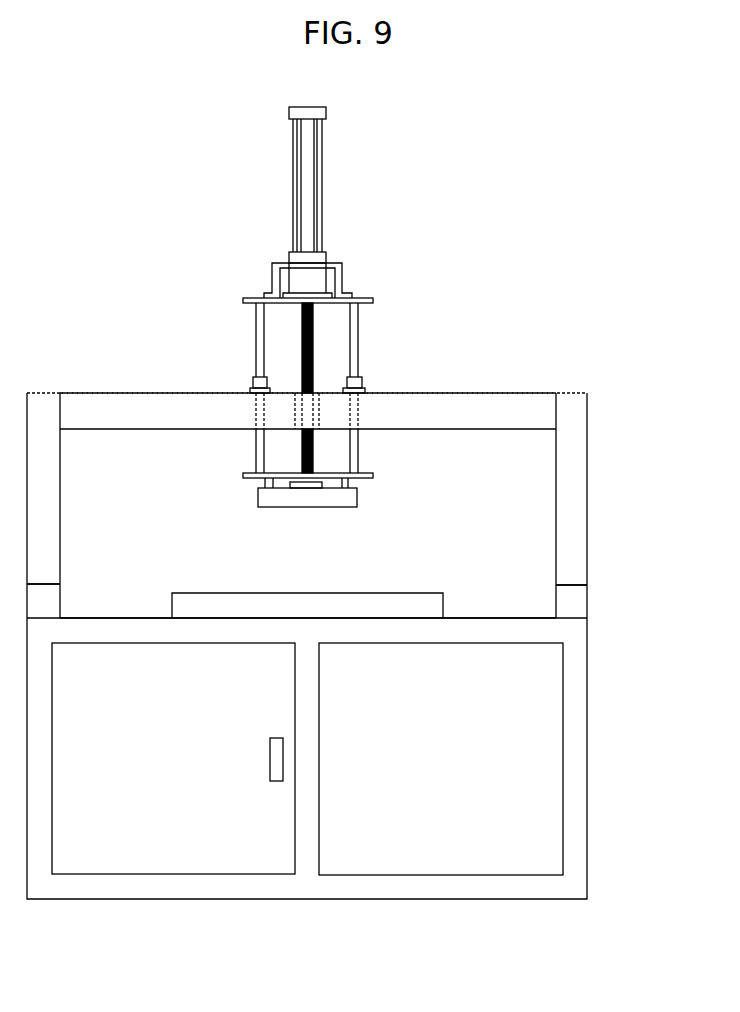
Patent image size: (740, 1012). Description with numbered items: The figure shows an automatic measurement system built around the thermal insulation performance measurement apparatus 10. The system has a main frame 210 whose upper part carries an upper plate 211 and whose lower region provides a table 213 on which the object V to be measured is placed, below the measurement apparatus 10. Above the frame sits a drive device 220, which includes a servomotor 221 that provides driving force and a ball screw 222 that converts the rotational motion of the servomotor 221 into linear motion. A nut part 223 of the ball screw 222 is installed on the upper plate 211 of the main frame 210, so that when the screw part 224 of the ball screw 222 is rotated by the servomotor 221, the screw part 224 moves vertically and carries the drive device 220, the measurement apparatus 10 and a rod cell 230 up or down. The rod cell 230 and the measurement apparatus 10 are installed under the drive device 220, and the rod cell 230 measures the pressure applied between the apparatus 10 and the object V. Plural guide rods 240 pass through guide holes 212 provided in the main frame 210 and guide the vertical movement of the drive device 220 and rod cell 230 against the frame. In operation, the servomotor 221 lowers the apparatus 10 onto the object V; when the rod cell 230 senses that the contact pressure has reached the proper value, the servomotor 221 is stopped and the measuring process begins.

The thermal insulation performance measurement apparatus 10 is at (364, 519).
The main frame 210 is at (612, 486).
The upper plate 211 is at (520, 405).
The guide holes 212 is at (255, 407).
The table 213 is at (510, 617).
The drive device 220 is at (380, 266).
The servomotor 221 is at (320, 185).
The ball screw 222 is at (338, 341).
The nut part 223 is at (294, 391).
The screw part 224 is at (317, 329).
The rod cell 230 is at (308, 485).
The guide rods 240 is at (260, 315).
The object to be measured V is at (197, 600).